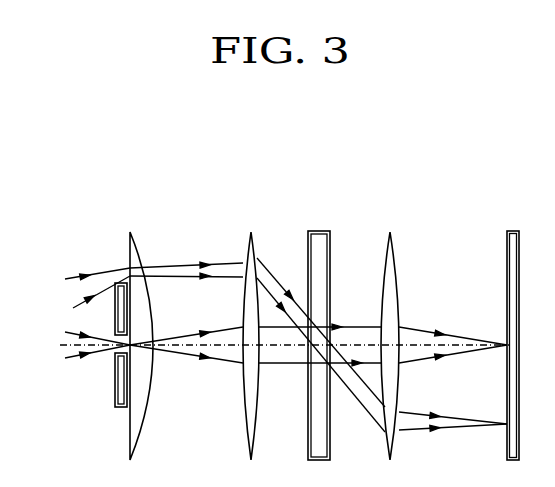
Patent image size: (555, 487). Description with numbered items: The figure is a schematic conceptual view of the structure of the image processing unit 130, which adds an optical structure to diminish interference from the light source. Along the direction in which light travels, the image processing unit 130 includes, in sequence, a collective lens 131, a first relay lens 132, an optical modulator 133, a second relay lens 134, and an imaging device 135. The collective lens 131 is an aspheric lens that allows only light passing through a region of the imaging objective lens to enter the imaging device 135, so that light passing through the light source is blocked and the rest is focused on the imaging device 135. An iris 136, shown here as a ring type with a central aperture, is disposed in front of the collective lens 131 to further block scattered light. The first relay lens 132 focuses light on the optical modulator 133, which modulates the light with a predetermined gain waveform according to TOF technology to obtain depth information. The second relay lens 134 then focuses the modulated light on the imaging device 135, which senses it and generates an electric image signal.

The image processing unit 130 is at (65, 187).
The collective lens 131 is at (133, 232).
The first relay lens 132 is at (251, 232).
The optical modulator 133 is at (318, 236).
The second relay lens 134 is at (390, 232).
The imaging device 135 is at (512, 236).
The iris 136 is at (115, 391).